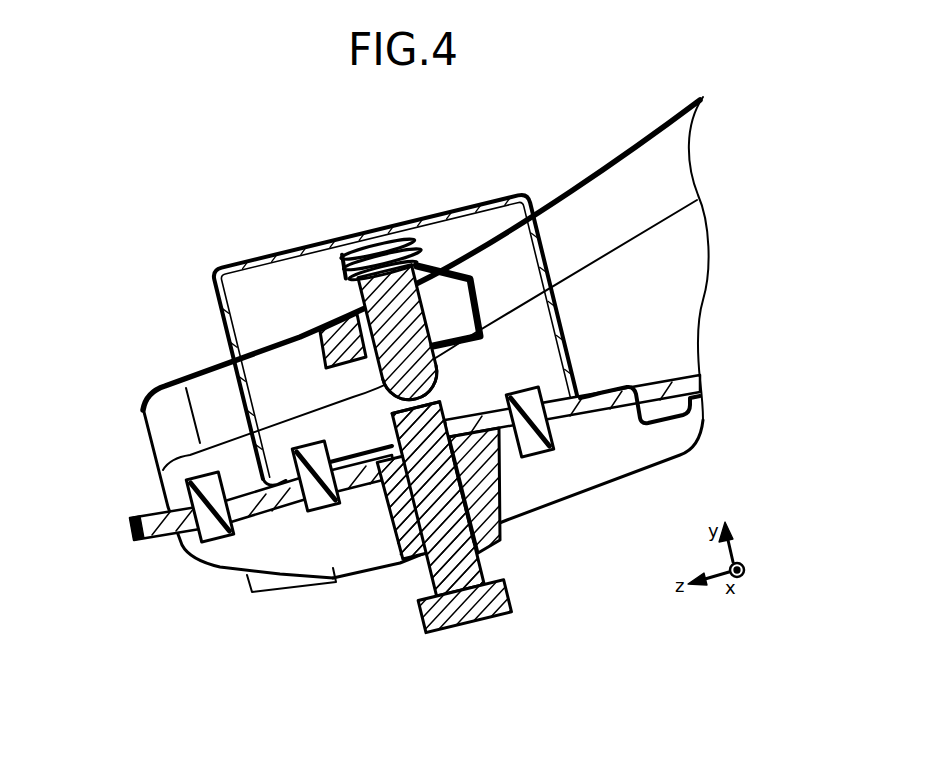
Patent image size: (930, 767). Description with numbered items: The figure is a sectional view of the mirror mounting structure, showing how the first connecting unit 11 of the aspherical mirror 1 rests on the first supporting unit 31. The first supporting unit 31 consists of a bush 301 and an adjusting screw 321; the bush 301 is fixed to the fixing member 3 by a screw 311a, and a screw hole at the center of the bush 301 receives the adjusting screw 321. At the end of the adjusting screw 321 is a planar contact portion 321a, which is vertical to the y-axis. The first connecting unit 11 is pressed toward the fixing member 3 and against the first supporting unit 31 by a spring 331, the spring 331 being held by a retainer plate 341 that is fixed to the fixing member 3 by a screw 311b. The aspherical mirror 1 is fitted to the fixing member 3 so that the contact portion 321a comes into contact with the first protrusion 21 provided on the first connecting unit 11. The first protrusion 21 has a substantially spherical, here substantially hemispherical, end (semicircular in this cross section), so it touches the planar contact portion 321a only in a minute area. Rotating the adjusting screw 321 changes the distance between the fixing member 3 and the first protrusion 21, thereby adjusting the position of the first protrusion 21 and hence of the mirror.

The aspherical mirror 1 is at (655, 193).
The fixing member 3 is at (147, 543).
The first connecting unit 11 is at (440, 228).
The first protrusion 21 is at (400, 403).
The first supporting unit 31 is at (465, 415).
The bush 301 is at (499, 512).
The adjusting screw 321 is at (490, 613).
The contact portion 321a is at (437, 398).
The screw 311a is at (348, 507).
The screw 311b is at (218, 540).
The spring 331 is at (369, 238).
The retainer plate 341 is at (262, 262).